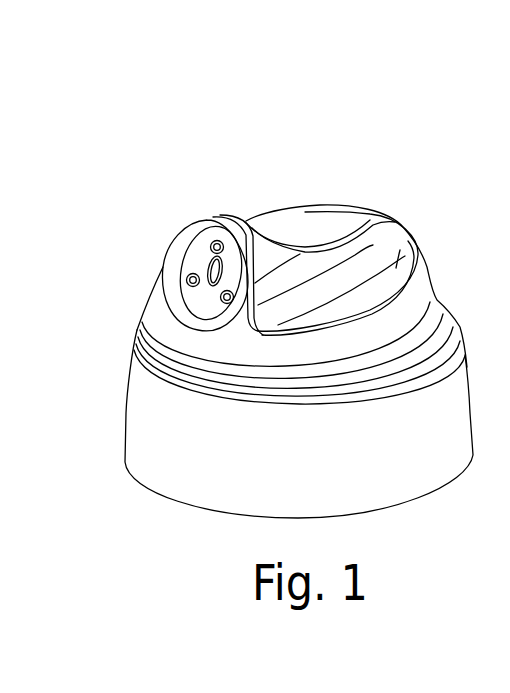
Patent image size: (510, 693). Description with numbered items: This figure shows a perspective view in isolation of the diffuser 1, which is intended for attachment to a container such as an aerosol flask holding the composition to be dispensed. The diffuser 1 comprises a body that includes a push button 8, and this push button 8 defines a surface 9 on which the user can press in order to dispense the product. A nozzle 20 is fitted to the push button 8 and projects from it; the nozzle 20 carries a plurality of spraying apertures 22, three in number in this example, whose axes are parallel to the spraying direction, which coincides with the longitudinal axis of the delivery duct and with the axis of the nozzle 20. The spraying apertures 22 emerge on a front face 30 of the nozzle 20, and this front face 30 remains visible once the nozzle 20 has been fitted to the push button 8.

The diffuser 1 is at (147, 142).
The push button 8 is at (420, 243).
The surface 9 is at (318, 228).
The nozzle 20 is at (190, 226).
The spraying apertures 22 is at (216, 241).
The front face 30 is at (249, 224).